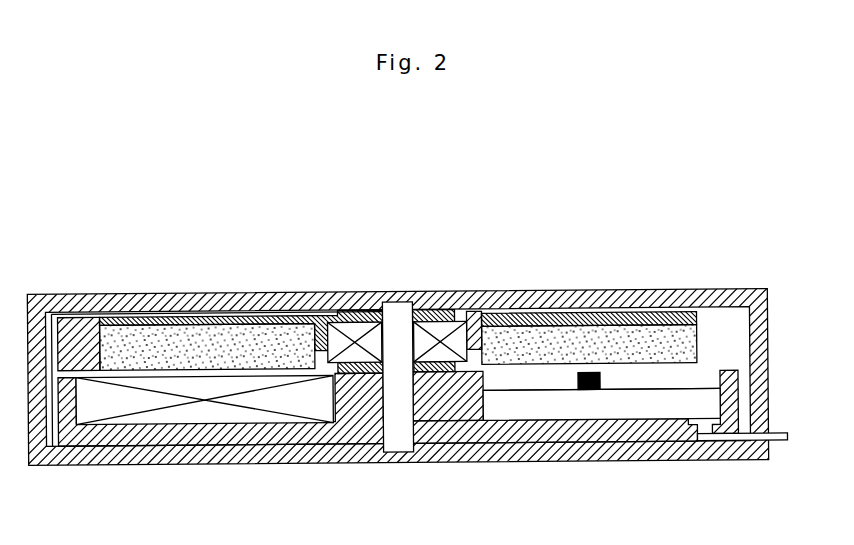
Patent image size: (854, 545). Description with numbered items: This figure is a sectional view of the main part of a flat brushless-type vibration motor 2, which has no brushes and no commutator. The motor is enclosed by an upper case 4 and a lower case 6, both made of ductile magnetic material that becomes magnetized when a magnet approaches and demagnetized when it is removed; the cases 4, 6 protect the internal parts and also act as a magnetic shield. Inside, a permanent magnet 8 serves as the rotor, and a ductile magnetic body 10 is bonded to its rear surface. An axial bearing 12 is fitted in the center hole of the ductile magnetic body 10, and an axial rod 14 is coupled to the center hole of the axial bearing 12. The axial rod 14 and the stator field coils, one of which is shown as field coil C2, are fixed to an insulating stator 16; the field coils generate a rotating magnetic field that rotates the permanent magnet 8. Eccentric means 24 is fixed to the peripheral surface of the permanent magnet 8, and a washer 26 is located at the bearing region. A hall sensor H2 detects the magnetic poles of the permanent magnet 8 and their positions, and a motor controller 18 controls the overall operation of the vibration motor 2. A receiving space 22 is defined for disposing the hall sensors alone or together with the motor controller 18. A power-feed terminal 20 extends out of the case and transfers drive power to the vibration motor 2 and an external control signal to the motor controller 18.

The vibration motor 2 is at (720, 262).
The upper case 4 is at (267, 296).
The lower case 6 is at (327, 462).
The permanent magnet 8 is at (185, 333).
The ductile magnetic body 10 is at (489, 309).
The axial bearing 12 is at (357, 333).
The axial rod 14 is at (400, 432).
The insulating stator 16 is at (464, 427).
The motor controller 18 is at (578, 408).
The power-feed terminal 20 is at (777, 435).
The receiving space 22 is at (661, 384).
The eccentric means 24 is at (78, 323).
The washer 26 is at (446, 340).
The stator field coil C2 is at (166, 411).
The hall sensor H2 is at (591, 374).